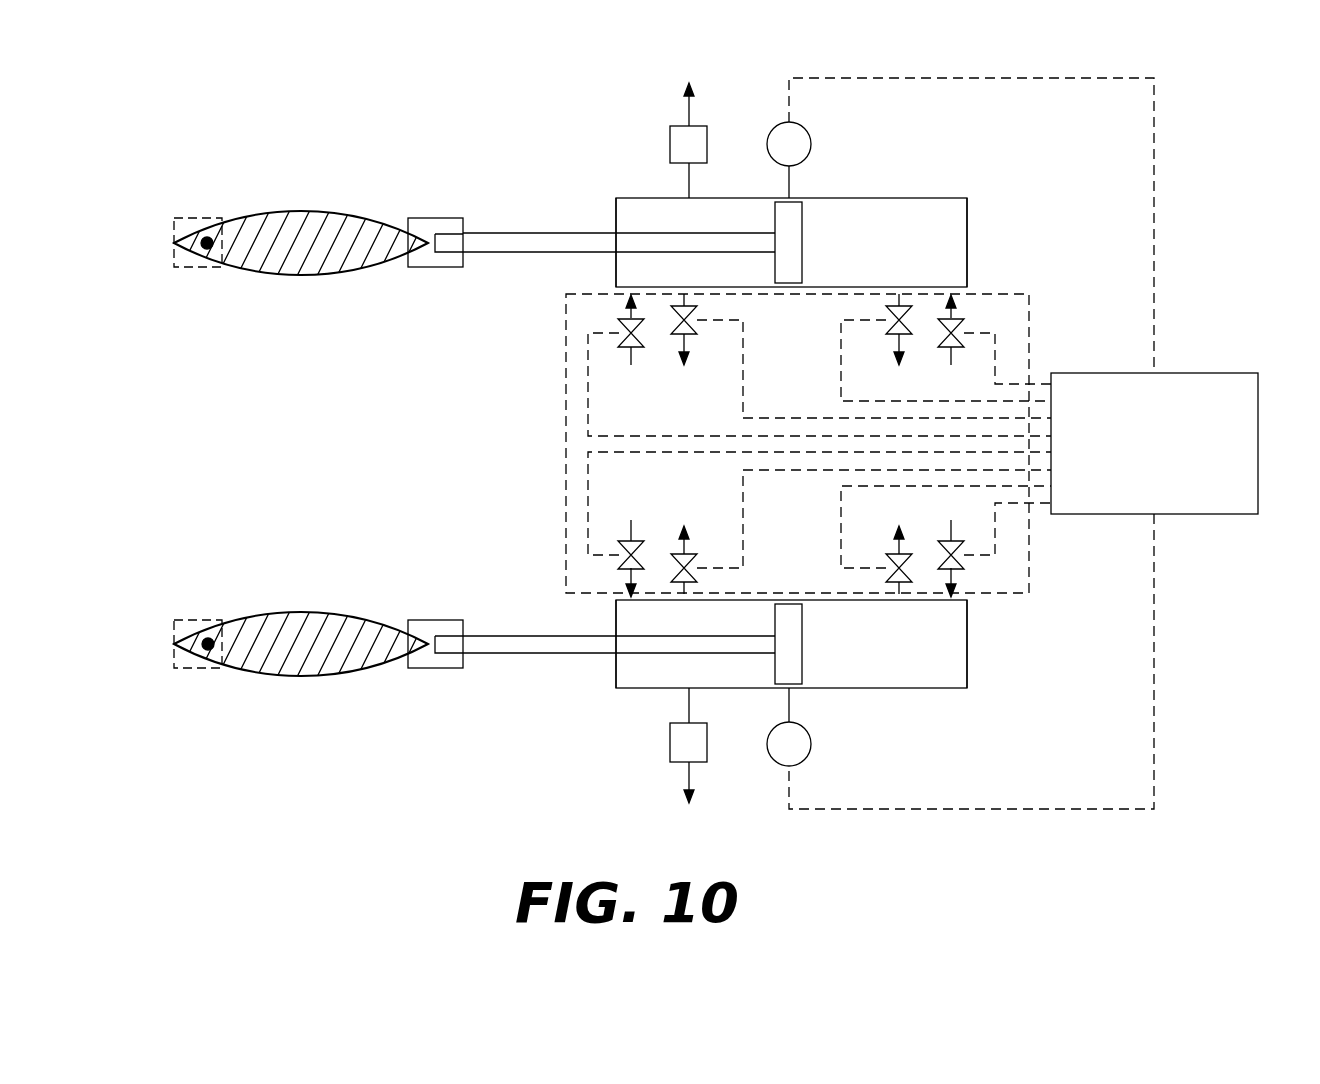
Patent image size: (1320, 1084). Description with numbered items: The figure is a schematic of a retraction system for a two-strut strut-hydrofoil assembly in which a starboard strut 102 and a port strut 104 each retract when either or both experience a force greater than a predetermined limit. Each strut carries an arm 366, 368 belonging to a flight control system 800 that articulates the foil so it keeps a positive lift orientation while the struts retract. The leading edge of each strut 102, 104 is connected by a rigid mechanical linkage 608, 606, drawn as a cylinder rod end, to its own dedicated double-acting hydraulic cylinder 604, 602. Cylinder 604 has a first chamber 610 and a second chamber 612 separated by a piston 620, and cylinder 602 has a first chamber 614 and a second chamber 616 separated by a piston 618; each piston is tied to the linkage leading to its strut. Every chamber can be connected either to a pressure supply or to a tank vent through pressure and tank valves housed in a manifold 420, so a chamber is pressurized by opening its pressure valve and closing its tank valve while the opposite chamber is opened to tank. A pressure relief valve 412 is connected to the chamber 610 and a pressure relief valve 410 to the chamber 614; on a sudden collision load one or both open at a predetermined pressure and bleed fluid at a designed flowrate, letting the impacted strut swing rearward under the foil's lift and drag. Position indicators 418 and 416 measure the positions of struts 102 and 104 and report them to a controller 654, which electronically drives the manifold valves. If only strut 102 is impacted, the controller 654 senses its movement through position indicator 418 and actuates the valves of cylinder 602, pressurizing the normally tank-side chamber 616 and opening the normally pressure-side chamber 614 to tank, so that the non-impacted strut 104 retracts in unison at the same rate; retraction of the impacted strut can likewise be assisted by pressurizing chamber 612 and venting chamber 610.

The starboard strut 102 is at (302, 612).
The port strut 104 is at (302, 211).
The arm 366 is at (208, 644).
The arm 368 is at (207, 243).
The pressure relief valve 410 is at (707, 140).
The pressure relief valve 412 is at (707, 748).
The position indicator 416 is at (809, 135).
The position indicator 418 is at (809, 753).
The manifold 420 is at (565, 404).
The double-acting hydraulic cylinder 602 is at (912, 198).
The double-acting hydraulic cylinder 604 is at (912, 688).
The rigid mechanical linkage 606 is at (521, 233).
The rigid mechanical linkage 608 is at (521, 636).
The first chamber 610 is at (634, 684).
The second chamber 612 is at (950, 654).
The first chamber 614 is at (634, 205).
The second chamber 616 is at (950, 236).
The piston 618 is at (798, 220).
The piston 620 is at (798, 665).
The controller 654 is at (1185, 373).
The flight control system 800 is at (199, 282).